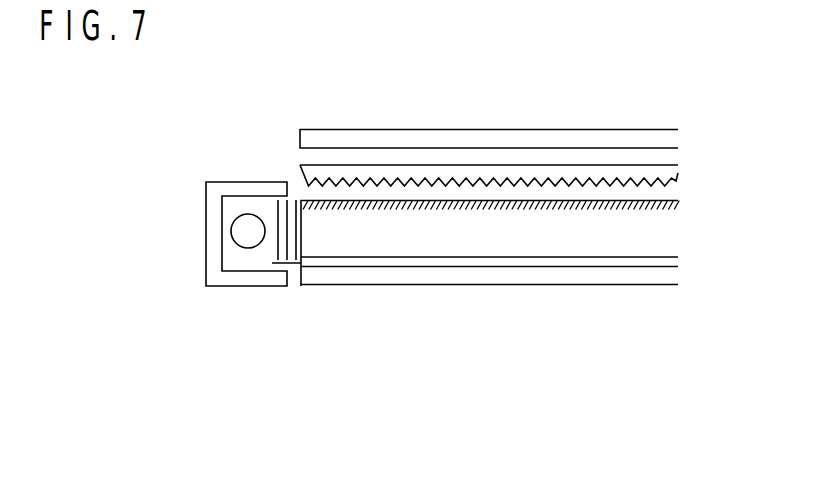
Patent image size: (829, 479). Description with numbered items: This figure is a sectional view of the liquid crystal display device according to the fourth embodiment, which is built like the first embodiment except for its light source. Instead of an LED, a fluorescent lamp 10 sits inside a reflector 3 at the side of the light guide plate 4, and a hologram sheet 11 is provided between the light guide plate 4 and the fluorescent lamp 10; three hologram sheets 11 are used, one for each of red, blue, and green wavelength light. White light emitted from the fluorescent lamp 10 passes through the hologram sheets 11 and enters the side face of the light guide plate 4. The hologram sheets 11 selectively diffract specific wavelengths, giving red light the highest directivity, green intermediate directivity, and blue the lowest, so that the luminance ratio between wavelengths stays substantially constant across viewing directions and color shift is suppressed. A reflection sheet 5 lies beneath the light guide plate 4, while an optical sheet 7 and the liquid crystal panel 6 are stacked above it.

The reflector 3 is at (247, 180).
The light guide plate 4 is at (672, 232).
The reflection sheet 5 is at (672, 278).
The liquid crystal panel 6 is at (672, 137).
The optical sheet 7 is at (673, 173).
The fluorescent lamp 10 is at (255, 242).
The hologram sheet 11 is at (292, 263).